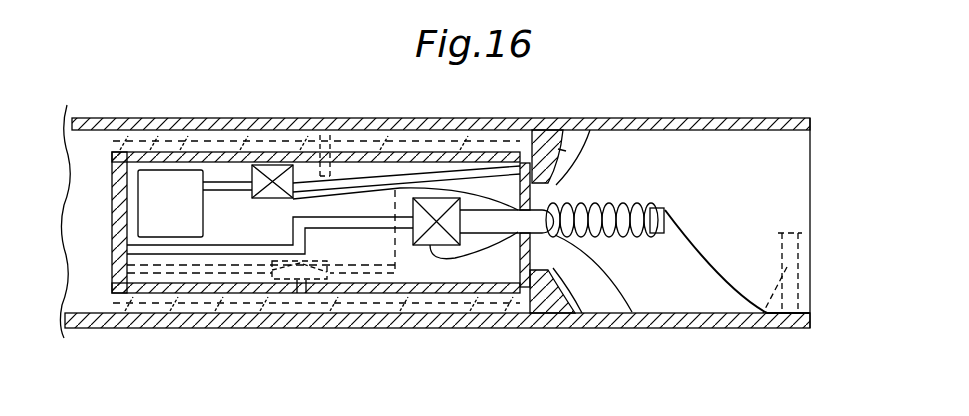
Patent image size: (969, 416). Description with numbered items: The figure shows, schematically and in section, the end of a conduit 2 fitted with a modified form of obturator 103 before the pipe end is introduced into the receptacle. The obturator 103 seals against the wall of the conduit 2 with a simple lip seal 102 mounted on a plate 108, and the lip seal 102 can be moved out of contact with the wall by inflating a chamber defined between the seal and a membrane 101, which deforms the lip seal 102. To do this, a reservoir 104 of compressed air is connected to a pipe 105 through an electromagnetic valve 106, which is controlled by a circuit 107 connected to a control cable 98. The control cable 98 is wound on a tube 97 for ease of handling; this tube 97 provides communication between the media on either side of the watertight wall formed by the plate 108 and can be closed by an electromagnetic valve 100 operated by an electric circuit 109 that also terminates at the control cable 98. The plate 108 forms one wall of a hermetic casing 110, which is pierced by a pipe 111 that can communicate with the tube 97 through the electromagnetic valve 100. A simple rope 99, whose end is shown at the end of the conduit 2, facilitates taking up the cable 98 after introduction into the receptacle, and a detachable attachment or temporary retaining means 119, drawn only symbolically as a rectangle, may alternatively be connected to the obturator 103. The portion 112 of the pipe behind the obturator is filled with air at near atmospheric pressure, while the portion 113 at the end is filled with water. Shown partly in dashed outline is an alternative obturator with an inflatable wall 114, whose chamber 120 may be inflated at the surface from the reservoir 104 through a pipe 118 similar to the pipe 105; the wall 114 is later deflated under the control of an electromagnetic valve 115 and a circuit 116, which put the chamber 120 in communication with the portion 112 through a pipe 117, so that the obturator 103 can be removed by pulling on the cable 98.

The conduit 2 is at (395, 330).
The tube 97 is at (632, 312).
The control cable 98 is at (622, 204).
The rope 99 is at (727, 292).
The electromagnetic valve 100 is at (428, 247).
The membrane 101 is at (588, 130).
The lip seal 102 is at (547, 128).
The obturator 103 is at (99, 176).
The reservoir 104 is at (167, 183).
The pipe 105 is at (353, 160).
The electromagnetic valve 106 is at (274, 183).
The circuit 107 is at (283, 199).
The plate 108 is at (530, 300).
The electric circuit 109 is at (468, 257).
The hermetic casing 110 is at (230, 158).
The pipe 111 is at (227, 248).
The portion of the pipe 112 is at (78, 280).
The portion of the pipe 113 is at (746, 150).
The inflatable wall 114 is at (199, 294).
The electromagnetic valve 115 is at (327, 282).
The circuit 116 is at (368, 268).
The pipe 117 is at (152, 312).
The pipe 118 is at (329, 135).
The retaining means 119 is at (765, 315).
The chamber 120 is at (366, 300).